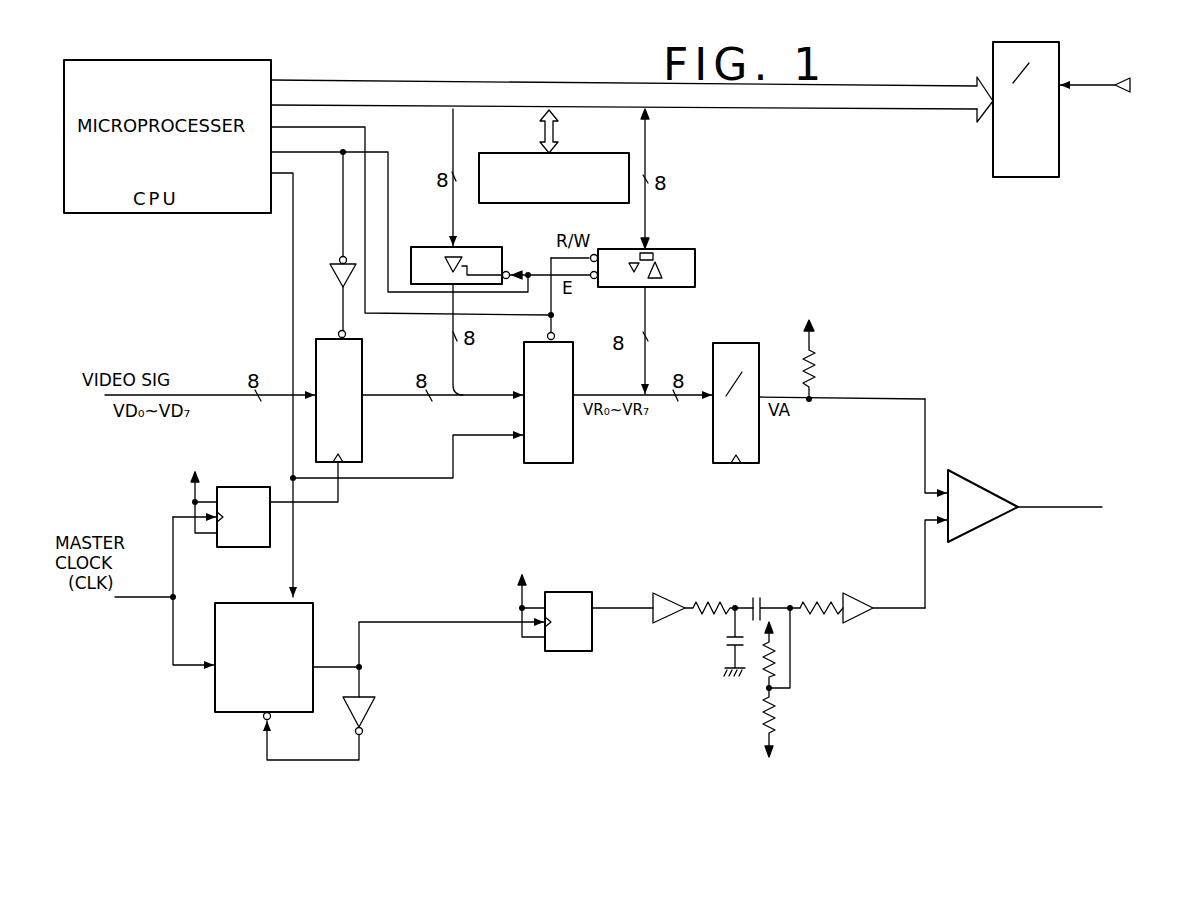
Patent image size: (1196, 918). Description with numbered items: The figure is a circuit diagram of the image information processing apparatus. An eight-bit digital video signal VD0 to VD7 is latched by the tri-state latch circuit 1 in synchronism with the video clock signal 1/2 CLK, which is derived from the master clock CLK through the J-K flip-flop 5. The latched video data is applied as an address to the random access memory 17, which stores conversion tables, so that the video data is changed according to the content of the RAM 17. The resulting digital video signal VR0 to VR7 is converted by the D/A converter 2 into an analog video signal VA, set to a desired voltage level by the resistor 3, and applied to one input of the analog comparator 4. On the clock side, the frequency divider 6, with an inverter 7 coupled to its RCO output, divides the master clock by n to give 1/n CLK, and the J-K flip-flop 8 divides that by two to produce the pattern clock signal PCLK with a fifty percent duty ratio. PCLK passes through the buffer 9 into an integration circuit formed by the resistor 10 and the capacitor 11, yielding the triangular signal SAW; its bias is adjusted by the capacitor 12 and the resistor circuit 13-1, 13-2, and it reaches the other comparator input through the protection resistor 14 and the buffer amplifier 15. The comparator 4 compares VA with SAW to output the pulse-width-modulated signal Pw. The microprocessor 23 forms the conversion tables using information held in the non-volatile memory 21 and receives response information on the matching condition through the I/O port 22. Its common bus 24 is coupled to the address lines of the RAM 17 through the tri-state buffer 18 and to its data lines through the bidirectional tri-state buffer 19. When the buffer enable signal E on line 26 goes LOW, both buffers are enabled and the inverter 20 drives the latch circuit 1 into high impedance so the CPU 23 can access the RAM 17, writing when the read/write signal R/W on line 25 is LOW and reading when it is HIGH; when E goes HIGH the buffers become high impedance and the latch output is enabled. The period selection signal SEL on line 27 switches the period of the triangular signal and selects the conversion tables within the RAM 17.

The latch circuit 1 is at (365, 368).
The D/A converter 2 is at (748, 344).
The resistor 3 is at (814, 380).
The analog comparator 4 is at (990, 490).
The J-K flip-flop 5 is at (250, 487).
The frequency divider 6 is at (308, 616).
The inverter 7 is at (378, 706).
The J-K flip-flop 8 is at (566, 651).
The buffer 9 is at (660, 596).
The resistor 10 is at (712, 598).
The capacitor 11 is at (725, 643).
The capacitor 12 is at (762, 597).
The resistor circuit 13-1 is at (788, 656).
The resistor circuit 13-2 is at (780, 716).
The protection resistor 14 is at (819, 600).
The buffer amplifier 15 is at (862, 617).
The random access memory 17 is at (575, 450).
The tri-state buffer 18 is at (485, 250).
The bidirectional tri-state buffer 19 is at (683, 252).
The inverter 20 is at (333, 262).
The non-volatile memory 21 is at (604, 155).
The I/O port 22 is at (993, 58).
The microprocessor 23 is at (279, 73).
The common bus 24 is at (520, 81).
The line 25 is at (367, 142).
The line 26 is at (389, 183).
The line 27 is at (292, 274).